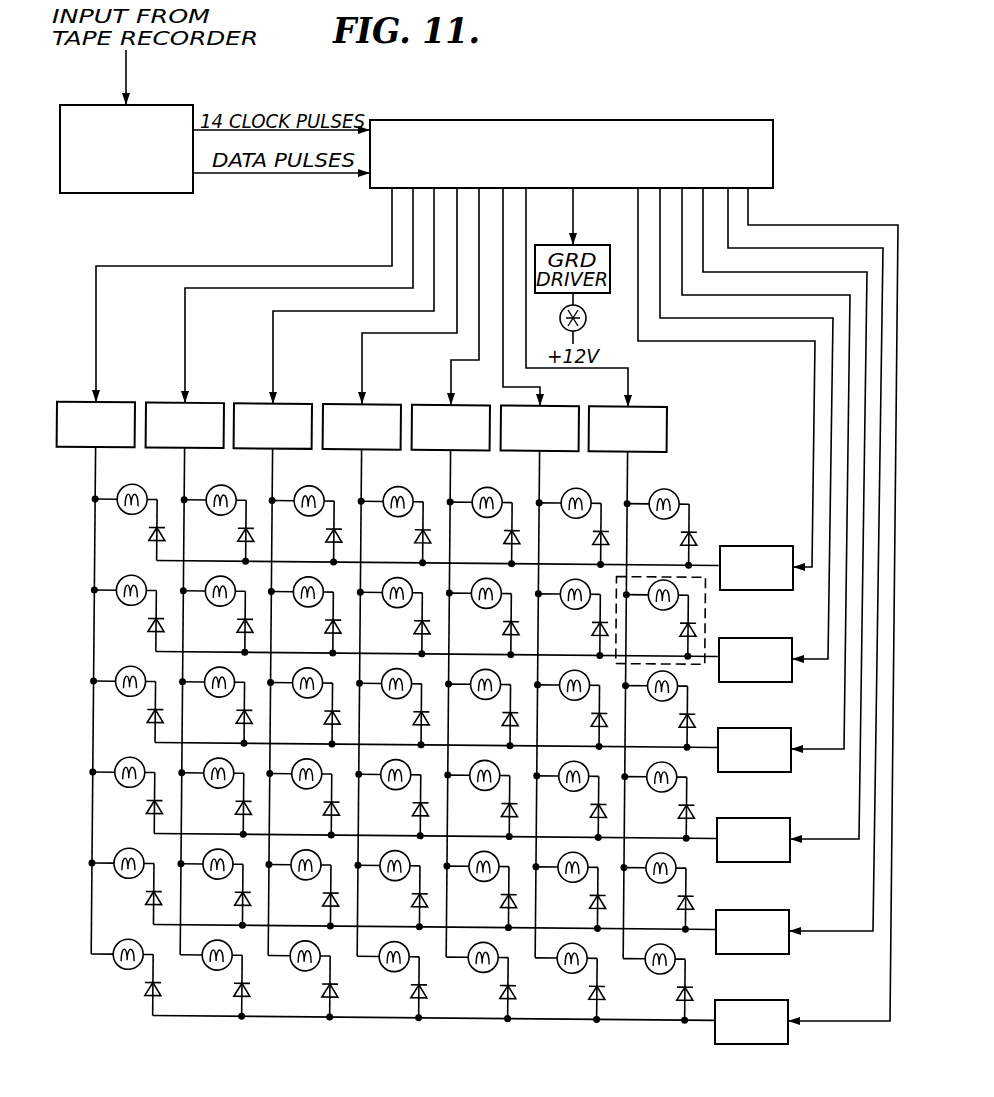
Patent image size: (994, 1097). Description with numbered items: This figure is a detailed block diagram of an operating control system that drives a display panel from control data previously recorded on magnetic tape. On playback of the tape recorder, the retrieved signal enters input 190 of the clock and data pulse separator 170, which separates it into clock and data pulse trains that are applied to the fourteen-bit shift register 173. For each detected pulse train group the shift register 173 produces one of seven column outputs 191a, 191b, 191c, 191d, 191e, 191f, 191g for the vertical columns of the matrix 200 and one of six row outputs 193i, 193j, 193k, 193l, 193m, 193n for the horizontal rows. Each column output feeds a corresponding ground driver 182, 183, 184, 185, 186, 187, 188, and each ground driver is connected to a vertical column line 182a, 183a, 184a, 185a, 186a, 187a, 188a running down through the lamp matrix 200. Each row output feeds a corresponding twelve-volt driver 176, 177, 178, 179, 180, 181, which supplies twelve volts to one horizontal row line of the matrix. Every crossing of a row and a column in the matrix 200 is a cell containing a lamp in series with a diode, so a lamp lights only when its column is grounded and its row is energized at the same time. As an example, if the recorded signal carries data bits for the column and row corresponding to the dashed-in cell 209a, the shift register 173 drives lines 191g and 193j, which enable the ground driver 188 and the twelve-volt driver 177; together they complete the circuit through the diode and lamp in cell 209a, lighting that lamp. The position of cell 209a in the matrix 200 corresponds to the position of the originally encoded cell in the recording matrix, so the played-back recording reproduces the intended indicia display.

The clock and data pulse separator 170 is at (135, 194).
The 14-bit shift register 173 is at (775, 143).
The 12-volt driver 176 is at (770, 545).
The 12-volt driver 177 is at (765, 620).
The 12-volt driver 178 is at (770, 703).
The 12-volt driver 179 is at (762, 792).
The 12-volt driver 180 is at (762, 884).
The 12-volt driver 181 is at (758, 975).
The ground driver 182 is at (113, 402).
The ground driver 183 is at (202, 402).
The ground driver 184 is at (290, 402).
The ground driver 185 is at (379, 402).
The ground driver 186 is at (487, 383).
The ground driver 187 is at (551, 402).
The ground driver 188 is at (641, 402).
The ground driver output column line 182a is at (98, 469).
The ground driver output column line 183a is at (187, 469).
The ground driver output column line 184a is at (275, 469).
The ground driver output column line 185a is at (364, 469).
The ground driver output column line 186a is at (453, 469).
The ground driver output column line 187a is at (542, 469).
The ground driver output column line 188a is at (630, 469).
The input 190 is at (128, 77).
The shift register output 191a is at (378, 210).
The shift register output 191b is at (404, 230).
The shift register output 191c is at (426, 230).
The shift register output 191d is at (448, 230).
The shift register output 191e is at (470, 230).
The shift register output 191f is at (493, 230).
The shift register output 191g is at (516, 231).
The shift register output 193i is at (626, 252).
The shift register output 193j is at (650, 249).
The shift register output 193k is at (671, 225).
The shift register output 193l is at (694, 226).
The shift register output 193m is at (716, 205).
The shift register output 193n is at (750, 212).
The matrix 200 is at (426, 772).
The cell 209a is at (707, 612).